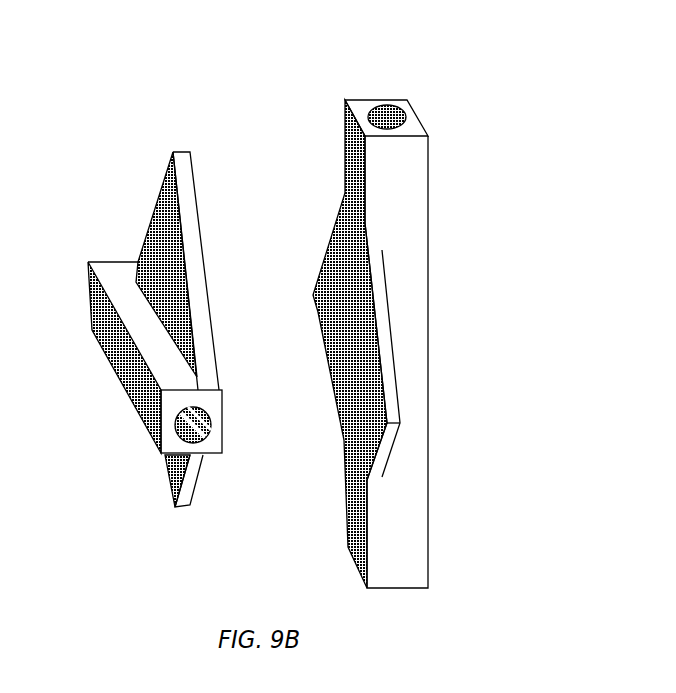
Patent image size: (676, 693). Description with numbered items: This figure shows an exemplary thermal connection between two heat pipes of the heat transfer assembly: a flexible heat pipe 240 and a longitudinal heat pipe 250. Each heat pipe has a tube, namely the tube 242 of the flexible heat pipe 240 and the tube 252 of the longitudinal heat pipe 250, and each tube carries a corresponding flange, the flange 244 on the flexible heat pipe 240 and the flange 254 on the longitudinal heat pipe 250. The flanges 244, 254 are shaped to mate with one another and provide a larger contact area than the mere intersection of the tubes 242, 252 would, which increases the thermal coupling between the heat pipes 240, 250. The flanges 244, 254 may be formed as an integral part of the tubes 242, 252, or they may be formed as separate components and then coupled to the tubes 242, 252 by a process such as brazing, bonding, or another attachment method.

The flexible heat pipe 240 is at (127, 132).
The tube 242 is at (117, 358).
The flange 244 is at (158, 237).
The longitudinal heat pipe 250 is at (362, 70).
The tube 252 is at (410, 205).
The flange 254 is at (330, 288).